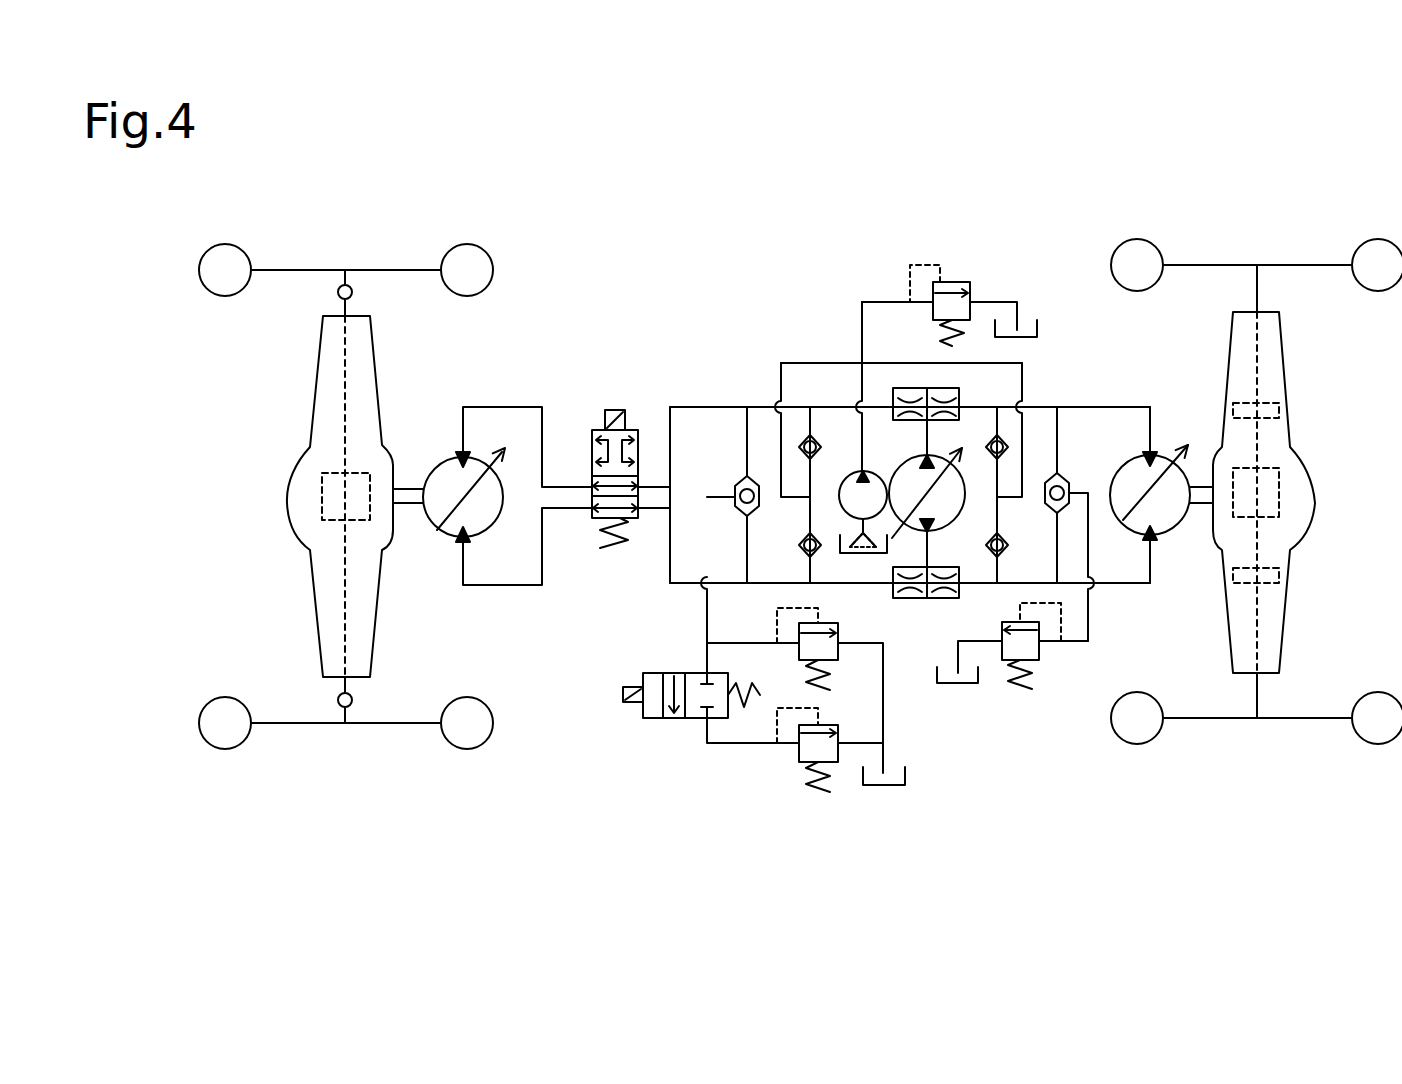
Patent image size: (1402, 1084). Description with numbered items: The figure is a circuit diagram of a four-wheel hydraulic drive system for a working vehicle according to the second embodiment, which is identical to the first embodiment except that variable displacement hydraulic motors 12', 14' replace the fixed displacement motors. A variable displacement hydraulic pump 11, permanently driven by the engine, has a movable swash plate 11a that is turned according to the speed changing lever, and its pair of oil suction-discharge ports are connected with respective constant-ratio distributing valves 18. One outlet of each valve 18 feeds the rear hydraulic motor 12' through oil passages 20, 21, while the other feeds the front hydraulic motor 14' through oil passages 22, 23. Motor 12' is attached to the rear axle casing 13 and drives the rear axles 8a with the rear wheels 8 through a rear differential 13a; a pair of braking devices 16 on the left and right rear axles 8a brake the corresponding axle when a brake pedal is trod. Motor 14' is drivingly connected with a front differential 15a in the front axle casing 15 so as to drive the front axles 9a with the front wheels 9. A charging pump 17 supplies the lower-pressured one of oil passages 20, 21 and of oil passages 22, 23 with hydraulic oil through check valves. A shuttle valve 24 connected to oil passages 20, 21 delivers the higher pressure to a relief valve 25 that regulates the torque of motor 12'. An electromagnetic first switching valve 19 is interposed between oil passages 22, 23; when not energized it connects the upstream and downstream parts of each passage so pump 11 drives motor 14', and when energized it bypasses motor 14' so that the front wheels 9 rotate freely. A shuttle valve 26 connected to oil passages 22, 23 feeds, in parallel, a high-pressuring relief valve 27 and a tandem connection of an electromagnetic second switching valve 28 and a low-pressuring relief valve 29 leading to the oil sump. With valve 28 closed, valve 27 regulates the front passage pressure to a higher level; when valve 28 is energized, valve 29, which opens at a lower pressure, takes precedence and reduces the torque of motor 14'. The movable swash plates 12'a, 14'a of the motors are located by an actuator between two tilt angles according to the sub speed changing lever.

The rear wheels 8 is at (1372, 240).
The rear axles 8a is at (1257, 289).
The front wheels 9 is at (489, 254).
The front axles 9a is at (341, 305).
The variable displacement hydraulic pump 11 is at (948, 526).
The movable swash plate 11a is at (962, 448).
The variable displacement hydraulic motor 12' is at (1167, 504).
The movable swash plate 12'a is at (1171, 453).
The rear axle casing 13 is at (1283, 437).
The rear differential 13a is at (1256, 492).
The variable displacement hydraulic motor 14' is at (494, 509).
The movable swash plate 14'a is at (492, 444).
The front axle casing 15 is at (376, 373).
The front differential 15a is at (345, 496).
The braking devices 16 is at (1288, 386).
The charging pump 17 is at (856, 476).
The constant-ratio distributing valves 18 is at (893, 395).
The electromagnetic first switching valve 19 is at (592, 520).
The oil passage 20 is at (1122, 406).
The oil passage 21 is at (1118, 586).
The oil passage 22 is at (688, 406).
The oil passage 23 is at (670, 558).
The shuttle valve 24 is at (1068, 480).
The relief valve 25 is at (1040, 660).
The shuttle valve 26 is at (739, 486).
The high-pressuring relief valve 27 is at (838, 632).
The electromagnetic second switching valve 28 is at (658, 672).
The low-pressuring relief valve 29 is at (797, 758).